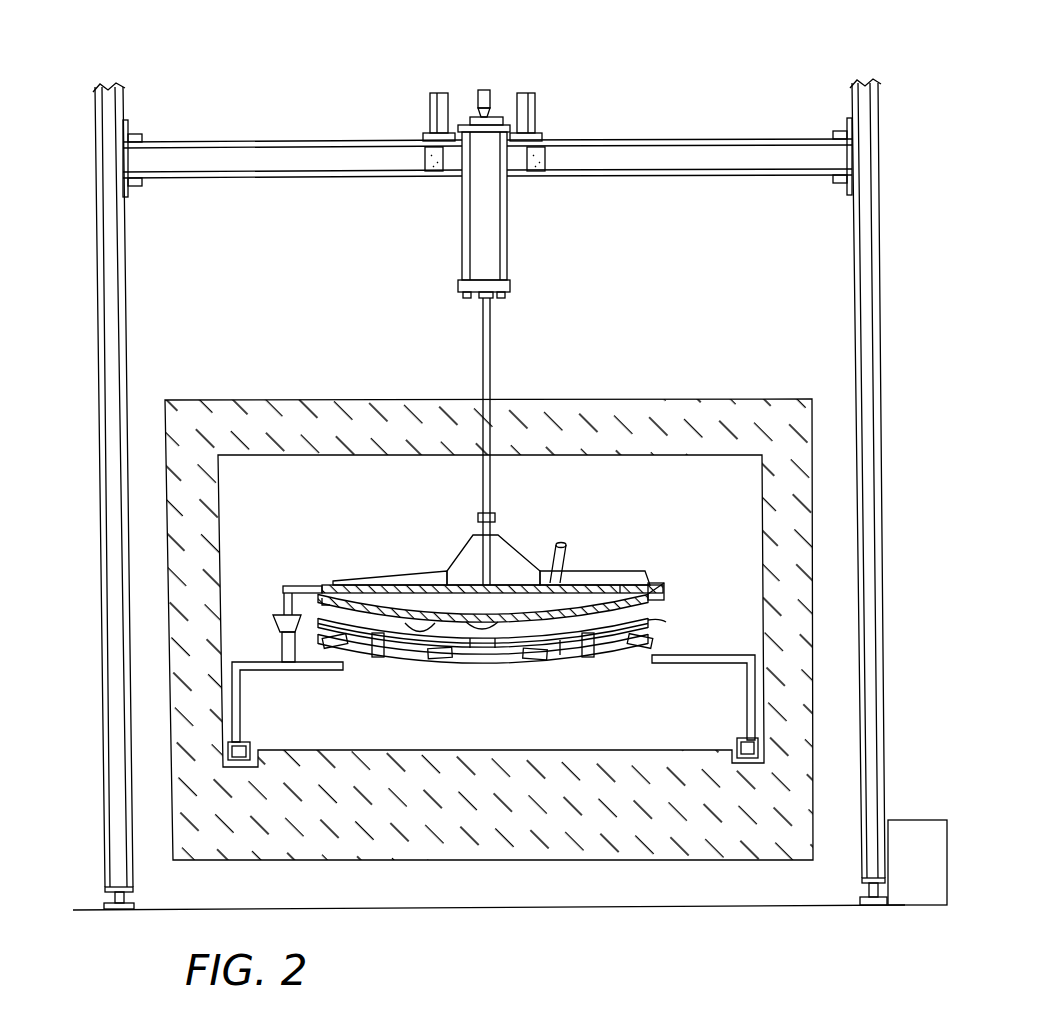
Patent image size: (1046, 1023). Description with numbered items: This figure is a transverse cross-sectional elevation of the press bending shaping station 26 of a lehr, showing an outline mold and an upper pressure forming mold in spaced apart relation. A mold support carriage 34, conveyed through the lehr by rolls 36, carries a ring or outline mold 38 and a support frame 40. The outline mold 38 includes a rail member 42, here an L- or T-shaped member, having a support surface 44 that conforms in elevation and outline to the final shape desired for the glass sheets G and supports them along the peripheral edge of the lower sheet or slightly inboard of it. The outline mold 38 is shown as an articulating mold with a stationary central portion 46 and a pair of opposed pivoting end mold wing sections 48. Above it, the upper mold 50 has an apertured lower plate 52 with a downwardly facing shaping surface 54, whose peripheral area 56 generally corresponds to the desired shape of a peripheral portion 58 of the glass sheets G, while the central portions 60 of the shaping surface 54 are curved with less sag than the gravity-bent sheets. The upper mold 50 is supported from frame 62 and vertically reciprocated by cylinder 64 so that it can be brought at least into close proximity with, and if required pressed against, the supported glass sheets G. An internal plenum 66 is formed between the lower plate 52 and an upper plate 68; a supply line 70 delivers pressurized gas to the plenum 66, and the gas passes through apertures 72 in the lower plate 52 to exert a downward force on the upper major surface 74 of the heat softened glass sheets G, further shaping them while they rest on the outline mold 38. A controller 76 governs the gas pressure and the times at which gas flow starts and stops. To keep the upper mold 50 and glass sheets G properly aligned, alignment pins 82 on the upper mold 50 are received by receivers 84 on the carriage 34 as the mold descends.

The shaping station 26 is at (581, 96).
The mold support carriage 34 is at (238, 672).
The rolls 36 is at (242, 760).
The outline mold 38 is at (398, 650).
The support frame 40 is at (535, 650).
The rail member 42 is at (550, 640).
The support surface 44 is at (382, 600).
The stationary central portion 46 is at (488, 648).
The pivoting end mold wing section 48 is at (333, 645).
The upper mold 50 is at (585, 583).
The apertured lower plate 52 is at (625, 585).
The shaping surface 54 is at (432, 612).
The peripheral area 56 is at (284, 606).
The peripheral portion 58 is at (652, 622).
The central portions 60 is at (475, 638).
The frame 62 is at (852, 258).
The cylinder 64 is at (507, 235).
The internal plenum 66 is at (497, 585).
The upper plate 68 is at (355, 585).
The supply line 70 is at (553, 540).
The apertures 72 is at (563, 645).
The upper major surface 74 is at (378, 640).
The controller 76 is at (926, 872).
The alignment pins 82 is at (284, 590).
The receivers 84 is at (278, 628).
The glass sheets G is at (491, 602).